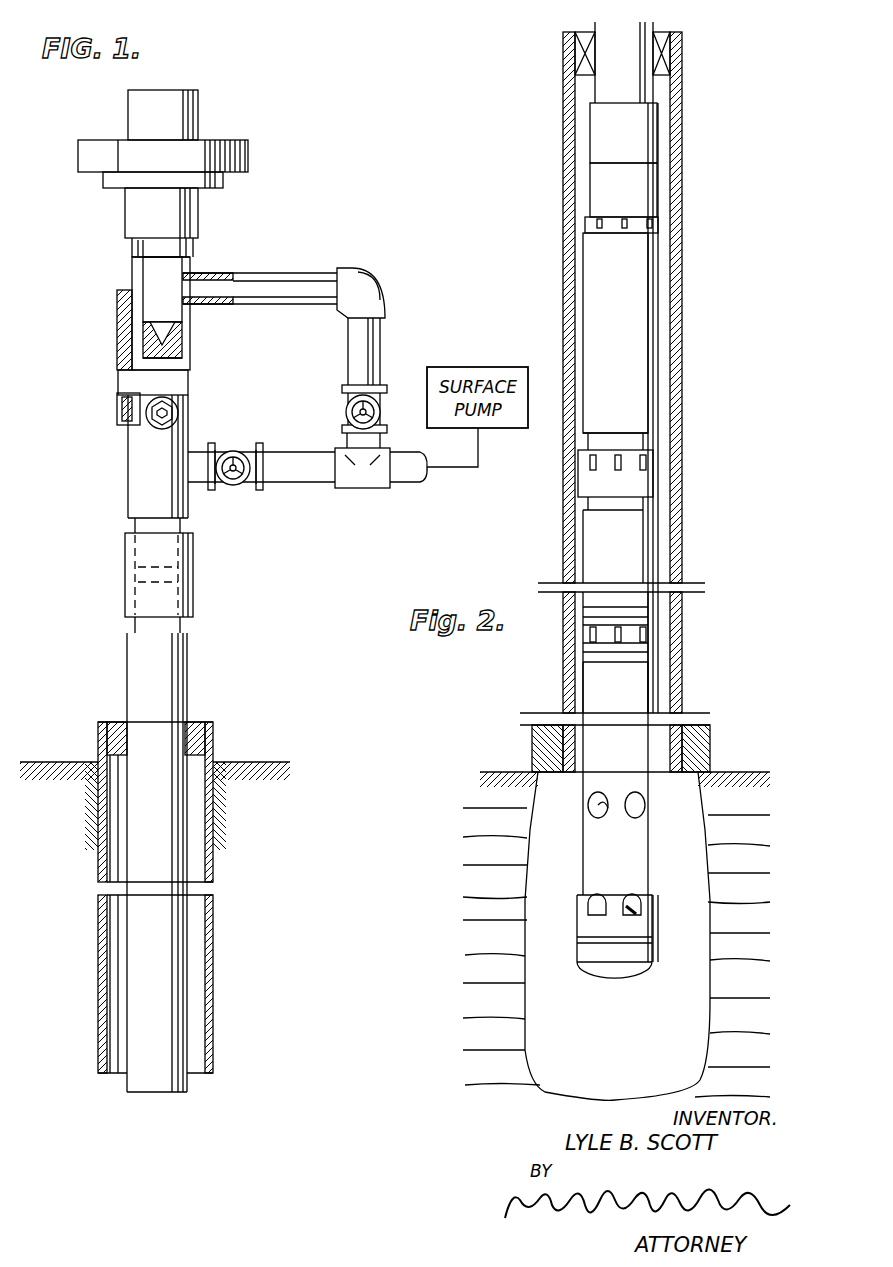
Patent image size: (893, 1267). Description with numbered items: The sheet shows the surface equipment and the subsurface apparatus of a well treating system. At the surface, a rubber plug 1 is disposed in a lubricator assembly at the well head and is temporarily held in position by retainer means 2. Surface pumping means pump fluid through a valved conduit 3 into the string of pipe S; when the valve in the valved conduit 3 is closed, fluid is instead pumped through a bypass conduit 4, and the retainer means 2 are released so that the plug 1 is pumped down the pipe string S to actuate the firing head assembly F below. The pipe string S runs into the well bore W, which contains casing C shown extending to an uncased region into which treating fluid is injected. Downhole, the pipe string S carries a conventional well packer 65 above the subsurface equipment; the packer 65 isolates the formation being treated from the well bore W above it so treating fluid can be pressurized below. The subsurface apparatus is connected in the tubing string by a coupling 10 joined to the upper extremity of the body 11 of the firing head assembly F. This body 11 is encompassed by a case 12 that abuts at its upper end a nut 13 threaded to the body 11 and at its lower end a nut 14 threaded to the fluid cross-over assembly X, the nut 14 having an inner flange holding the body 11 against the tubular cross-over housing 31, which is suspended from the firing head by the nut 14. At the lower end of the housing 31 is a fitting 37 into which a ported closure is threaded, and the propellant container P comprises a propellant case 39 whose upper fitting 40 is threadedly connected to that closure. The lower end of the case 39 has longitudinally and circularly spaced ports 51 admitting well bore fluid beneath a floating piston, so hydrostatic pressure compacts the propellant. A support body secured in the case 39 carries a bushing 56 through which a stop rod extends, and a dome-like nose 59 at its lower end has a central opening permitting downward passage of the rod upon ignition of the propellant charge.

In FIG. 1, the rubber plug 1 is at (128, 313).
In FIG. 1, the retainer means 2 is at (128, 420).
In FIG. 1, the valved conduit 3 is at (297, 472).
In FIG. 1, the bypass conduit 4 is at (372, 343).
In FIG. 1, the string of pipe S is at (137, 907).
In FIG. 2, the string of pipe S is at (648, 95).
In FIG. 1, the well bore W is at (197, 952).
In FIG. 2, the well bore W is at (665, 408).
In FIG. 1, the casing C is at (215, 1045).
In FIG. 2, the casing C is at (678, 492).
In FIG. 2, the well packer 65 is at (577, 60).
In FIG. 2, the coupling 10 is at (648, 140).
In FIG. 2, the body of the firing mechanism 11 is at (655, 192).
In FIG. 2, the nut 13 is at (660, 228).
In FIG. 2, the firing head assembly F is at (660, 290).
In FIG. 2, the case 12 is at (650, 340).
In FIG. 2, the nut 14 is at (665, 478).
In FIG. 2, the fluid cross-over assembly X is at (658, 535).
In FIG. 2, the cross-over housing 31 is at (637, 563).
In FIG. 2, the fitting 37 is at (650, 618).
In FIG. 2, the fitting 40 is at (650, 655).
In FIG. 2, the propellant container P is at (652, 697).
In FIG. 2, the propellant case 39 is at (592, 680).
In FIG. 2, the ports 51 is at (633, 812).
In FIG. 2, the bushing 56 is at (588, 907).
In FIG. 2, the dome-like nose 59 is at (608, 968).